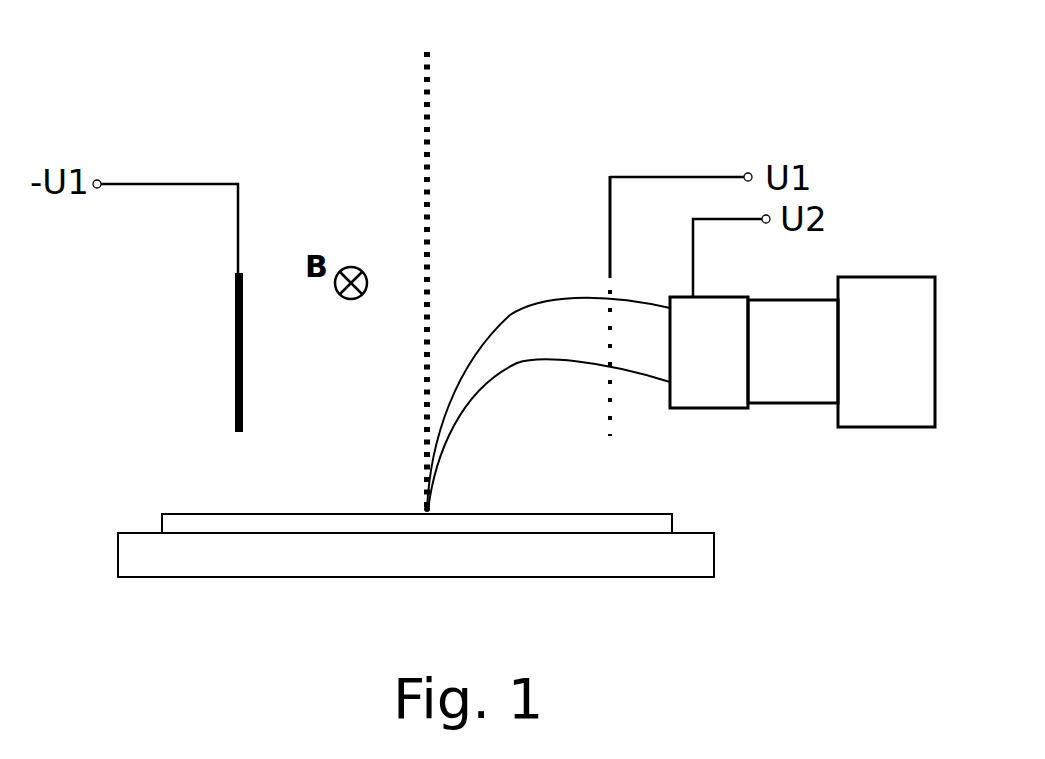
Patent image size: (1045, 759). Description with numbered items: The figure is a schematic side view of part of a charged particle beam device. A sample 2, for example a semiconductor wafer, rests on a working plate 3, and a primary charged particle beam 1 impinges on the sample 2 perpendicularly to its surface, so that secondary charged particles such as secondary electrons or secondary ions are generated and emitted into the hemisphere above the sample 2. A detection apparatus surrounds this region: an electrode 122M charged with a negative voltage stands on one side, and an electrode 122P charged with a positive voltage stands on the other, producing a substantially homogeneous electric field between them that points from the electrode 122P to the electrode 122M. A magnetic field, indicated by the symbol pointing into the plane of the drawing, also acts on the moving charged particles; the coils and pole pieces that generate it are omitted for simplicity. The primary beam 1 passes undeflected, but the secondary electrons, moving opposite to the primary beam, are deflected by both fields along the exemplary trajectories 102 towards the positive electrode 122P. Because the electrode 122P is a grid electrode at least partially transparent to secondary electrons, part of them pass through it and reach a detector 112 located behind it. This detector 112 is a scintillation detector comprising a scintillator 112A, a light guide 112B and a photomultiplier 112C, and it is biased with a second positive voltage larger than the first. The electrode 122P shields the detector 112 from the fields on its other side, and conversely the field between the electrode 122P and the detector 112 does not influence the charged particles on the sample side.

The primary charged particle beam 1 is at (425, 88).
The trajectories 102 is at (512, 362).
The detector 112 is at (813, 274).
The scintillator 112A is at (710, 352).
The light guide 112B is at (793, 351).
The photomultiplier 112C is at (898, 262).
The electrode 122M is at (235, 373).
The electrode 122P is at (604, 414).
The sample 2 is at (602, 523).
The working plate 3 is at (660, 563).